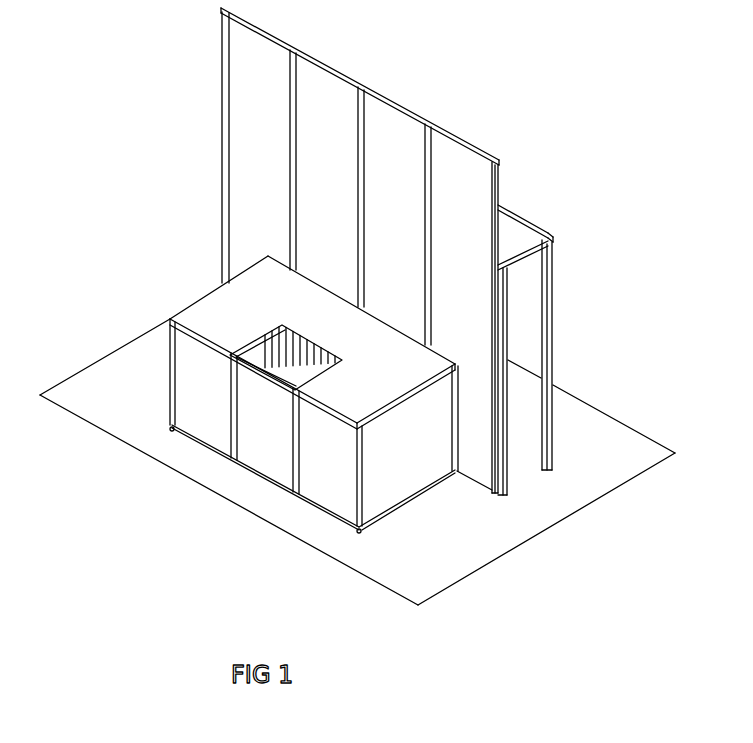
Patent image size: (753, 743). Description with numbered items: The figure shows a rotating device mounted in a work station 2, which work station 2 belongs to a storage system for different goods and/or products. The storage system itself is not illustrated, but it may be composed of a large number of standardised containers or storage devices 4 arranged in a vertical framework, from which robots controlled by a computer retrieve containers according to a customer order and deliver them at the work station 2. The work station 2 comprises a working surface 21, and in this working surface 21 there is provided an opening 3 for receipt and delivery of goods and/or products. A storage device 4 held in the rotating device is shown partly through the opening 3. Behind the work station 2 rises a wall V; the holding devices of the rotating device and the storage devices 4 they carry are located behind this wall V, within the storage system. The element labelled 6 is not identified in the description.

The wall V is at (252, 162).
The work station 2 is at (183, 292).
The opening 3 is at (317, 377).
The storage device 4 is at (268, 348).
The cabinet frame 6 is at (314, 443).
The working surface 21 is at (329, 352).